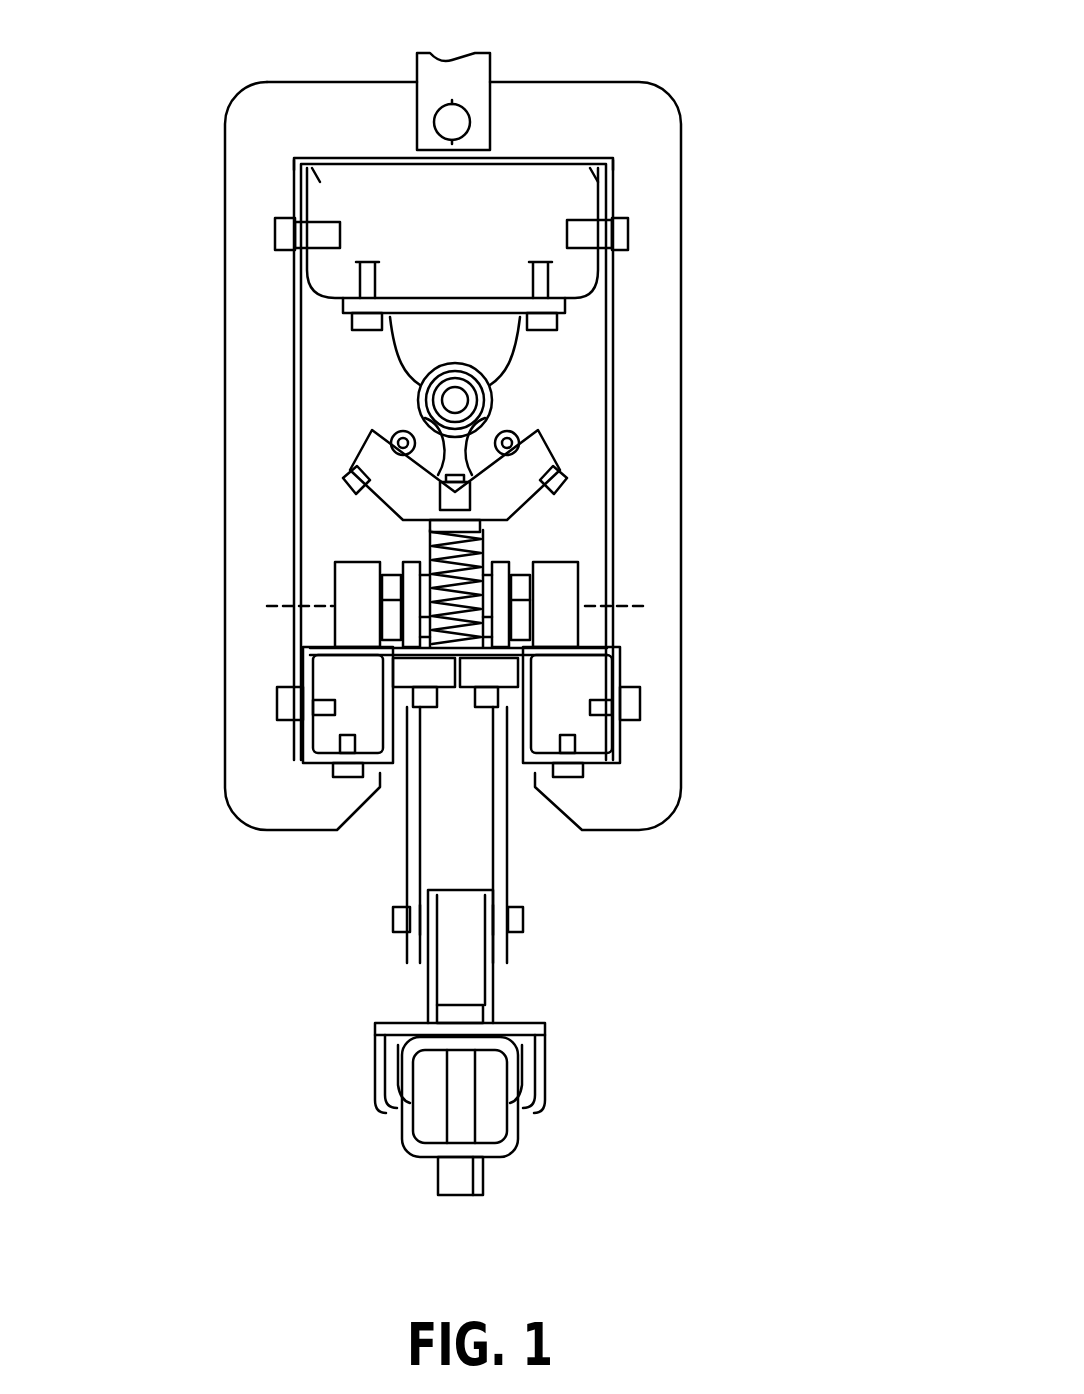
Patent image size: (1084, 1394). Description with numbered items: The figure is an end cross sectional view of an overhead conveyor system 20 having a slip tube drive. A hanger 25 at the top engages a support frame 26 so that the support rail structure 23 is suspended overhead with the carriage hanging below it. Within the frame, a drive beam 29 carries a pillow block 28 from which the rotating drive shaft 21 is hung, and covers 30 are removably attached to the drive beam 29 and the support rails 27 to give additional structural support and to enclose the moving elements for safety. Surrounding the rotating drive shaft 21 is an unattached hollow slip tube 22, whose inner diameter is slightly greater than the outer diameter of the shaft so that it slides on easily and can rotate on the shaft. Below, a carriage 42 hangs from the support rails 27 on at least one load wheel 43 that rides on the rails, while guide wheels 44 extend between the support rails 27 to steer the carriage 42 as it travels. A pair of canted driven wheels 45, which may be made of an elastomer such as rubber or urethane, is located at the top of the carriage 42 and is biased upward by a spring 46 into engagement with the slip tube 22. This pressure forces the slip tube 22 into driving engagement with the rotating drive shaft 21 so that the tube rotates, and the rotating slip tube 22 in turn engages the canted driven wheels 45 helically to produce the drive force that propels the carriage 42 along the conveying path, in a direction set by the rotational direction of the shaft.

The overhead conveyor system 20 is at (778, 440).
The rotating drive shaft 21 is at (462, 365).
The slip tube 22 is at (432, 375).
The support rail structure 23 is at (748, 720).
The hanger 25 is at (478, 80).
The support frame 26 is at (653, 807).
The support rails 27 is at (330, 647).
The pillow block 28 is at (440, 336).
The drive beam 29 is at (598, 176).
The covers 30 is at (290, 310).
The carriage 42 is at (316, 510).
The load wheel 43 is at (353, 582).
The guide wheels 44 is at (473, 683).
The canted driven wheels 45 is at (385, 428).
The spring 46 is at (490, 578).